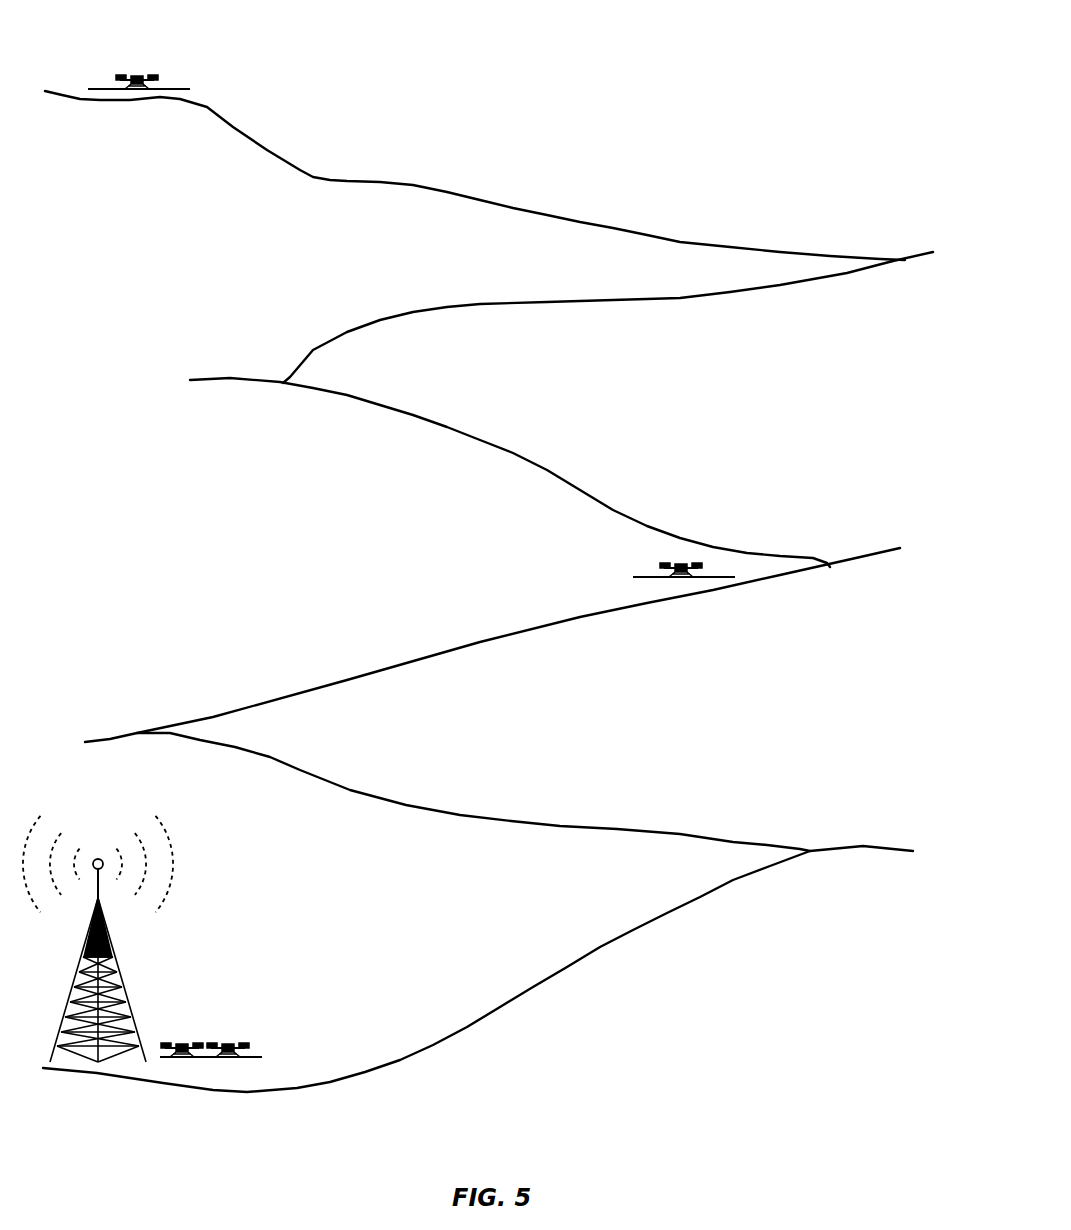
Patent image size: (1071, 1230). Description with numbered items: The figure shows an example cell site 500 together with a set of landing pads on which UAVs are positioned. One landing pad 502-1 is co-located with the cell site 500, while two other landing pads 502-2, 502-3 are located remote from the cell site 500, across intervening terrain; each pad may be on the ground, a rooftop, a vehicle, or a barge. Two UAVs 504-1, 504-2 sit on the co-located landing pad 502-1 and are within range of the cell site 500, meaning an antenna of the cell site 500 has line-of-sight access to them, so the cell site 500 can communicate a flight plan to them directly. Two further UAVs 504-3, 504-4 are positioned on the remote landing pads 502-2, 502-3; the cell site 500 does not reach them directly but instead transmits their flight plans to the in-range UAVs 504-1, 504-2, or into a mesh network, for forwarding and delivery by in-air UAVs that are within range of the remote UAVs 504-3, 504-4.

The cell site 500 is at (74, 768).
The landing pad 502-1 is at (205, 1062).
The landing pad 502-2 is at (680, 582).
The landing pad 502-3 is at (133, 95).
The UAV 504-1 is at (186, 1040).
The UAV 504-2 is at (231, 1040).
The UAV 504-3 is at (683, 560).
The UAV 504-4 is at (140, 74).